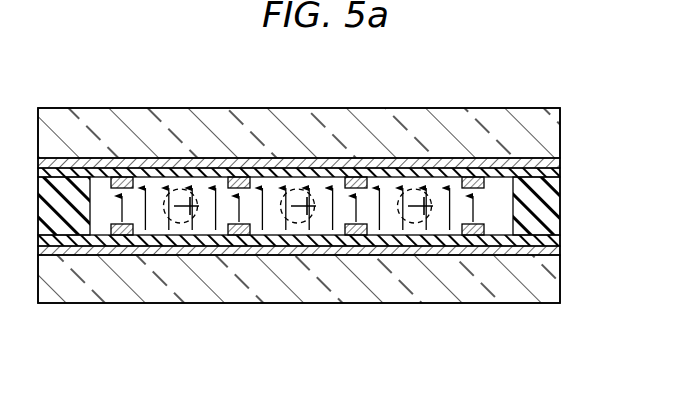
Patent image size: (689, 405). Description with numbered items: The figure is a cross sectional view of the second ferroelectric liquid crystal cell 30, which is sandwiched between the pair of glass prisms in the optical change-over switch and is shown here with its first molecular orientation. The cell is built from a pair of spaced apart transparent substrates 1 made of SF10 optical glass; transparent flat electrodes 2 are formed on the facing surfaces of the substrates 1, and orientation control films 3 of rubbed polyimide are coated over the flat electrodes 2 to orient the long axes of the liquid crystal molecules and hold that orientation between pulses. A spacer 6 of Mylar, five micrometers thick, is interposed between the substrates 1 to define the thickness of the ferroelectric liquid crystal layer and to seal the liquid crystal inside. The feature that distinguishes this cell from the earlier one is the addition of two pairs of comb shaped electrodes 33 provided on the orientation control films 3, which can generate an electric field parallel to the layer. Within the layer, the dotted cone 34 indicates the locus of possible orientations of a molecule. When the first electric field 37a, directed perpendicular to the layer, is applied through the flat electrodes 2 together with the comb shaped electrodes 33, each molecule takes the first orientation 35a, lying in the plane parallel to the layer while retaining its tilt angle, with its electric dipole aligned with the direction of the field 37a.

The ferroelectric liquid crystal cell 30 is at (545, 47).
The transparent substrate 1 is at (485, 130).
The transparent flat electrode 2 is at (560, 160).
The orientation control film 3 is at (560, 172).
The spacer 6 is at (560, 205).
The comb shaped electrode 33 is at (104, 176).
The dotted cone 34 is at (178, 190).
The first orientation 35a is at (180, 224).
The first electric field 37a is at (265, 212).